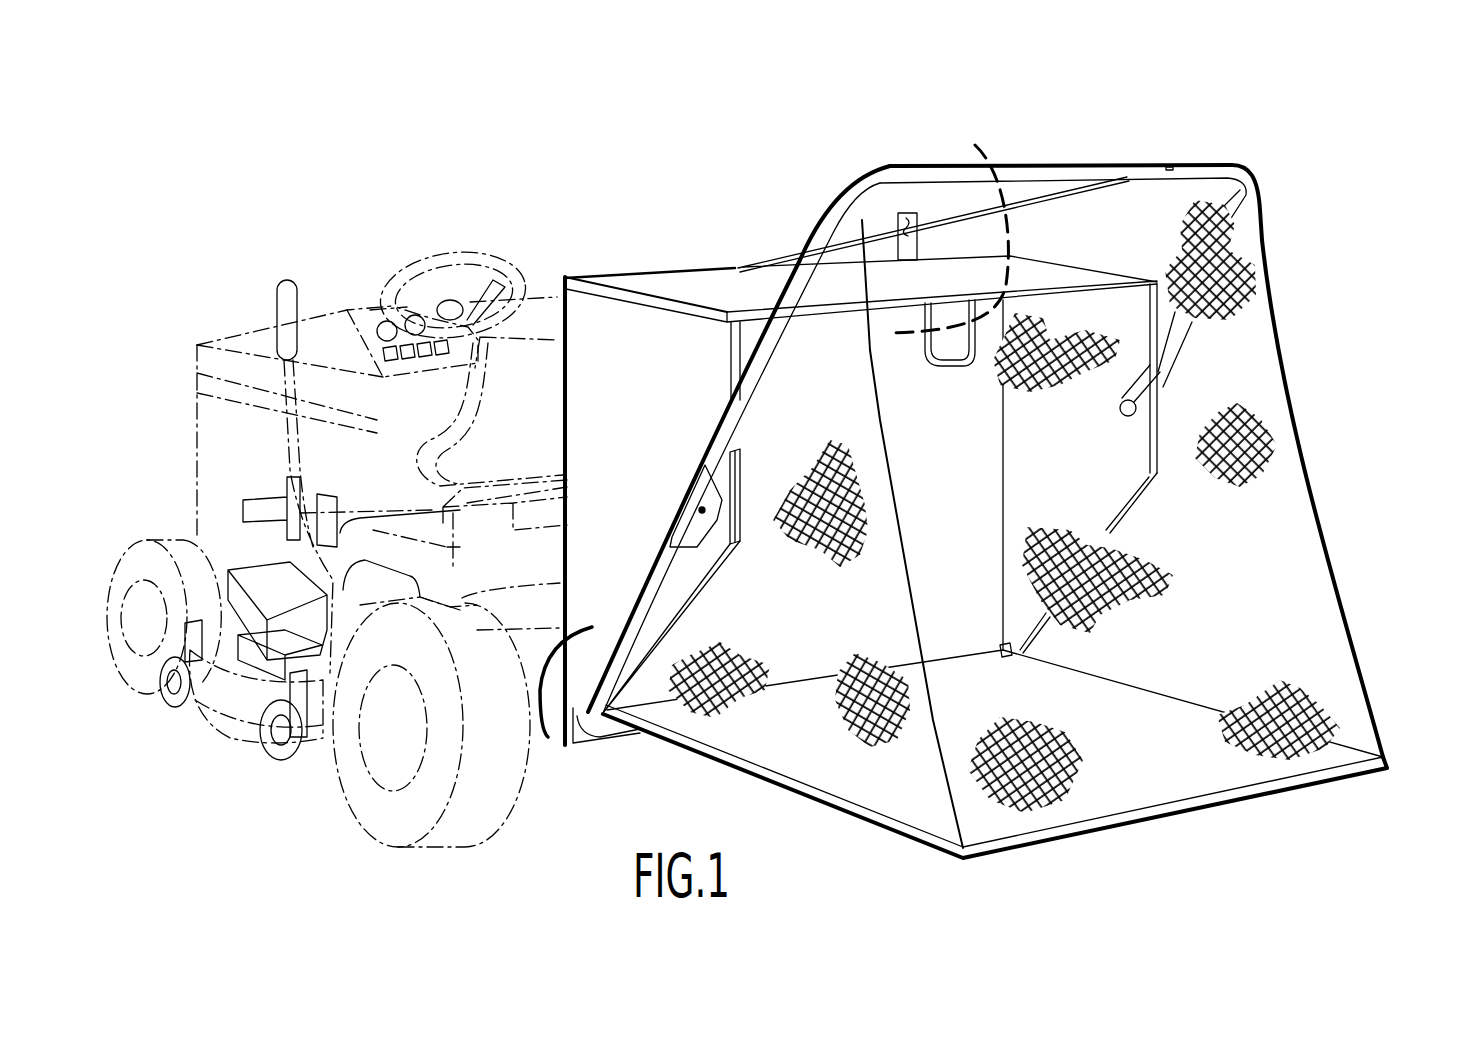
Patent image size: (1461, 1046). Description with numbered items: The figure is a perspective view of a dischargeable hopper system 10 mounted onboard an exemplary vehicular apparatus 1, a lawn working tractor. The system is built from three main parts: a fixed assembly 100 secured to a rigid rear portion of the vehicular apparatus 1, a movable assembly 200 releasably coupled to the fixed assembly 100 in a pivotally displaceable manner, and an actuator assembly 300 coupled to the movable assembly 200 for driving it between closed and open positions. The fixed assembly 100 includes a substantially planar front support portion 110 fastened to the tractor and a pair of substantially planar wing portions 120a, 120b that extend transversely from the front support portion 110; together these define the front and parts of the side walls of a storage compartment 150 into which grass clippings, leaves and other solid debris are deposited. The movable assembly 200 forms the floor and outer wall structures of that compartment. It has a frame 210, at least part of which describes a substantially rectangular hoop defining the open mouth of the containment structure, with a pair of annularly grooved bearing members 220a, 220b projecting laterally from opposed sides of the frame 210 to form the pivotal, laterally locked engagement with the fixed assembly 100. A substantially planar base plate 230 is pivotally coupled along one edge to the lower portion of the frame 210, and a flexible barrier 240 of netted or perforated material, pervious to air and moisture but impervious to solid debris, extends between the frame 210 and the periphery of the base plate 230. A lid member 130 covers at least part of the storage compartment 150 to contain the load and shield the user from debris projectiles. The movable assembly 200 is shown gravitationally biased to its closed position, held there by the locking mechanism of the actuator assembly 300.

The vehicular apparatus 1 is at (254, 335).
The dischargeable hopper system 10 is at (1171, 72).
The fixed assembly 100 is at (838, 519).
The front support portion 110 is at (980, 150).
The wing portion 120a is at (543, 727).
The wing portion 120b is at (1127, 338).
The lid member 130 is at (705, 284).
The storage compartment 150 is at (750, 339).
The movable assembly 200 is at (1015, 502).
The frame 210 is at (1203, 163).
The bearing member 220a is at (703, 513).
The bearing member 220b is at (1120, 414).
The base plate 230 is at (1118, 800).
The flexible barrier 240 is at (1318, 710).
The actuator assembly 300 is at (778, 252).